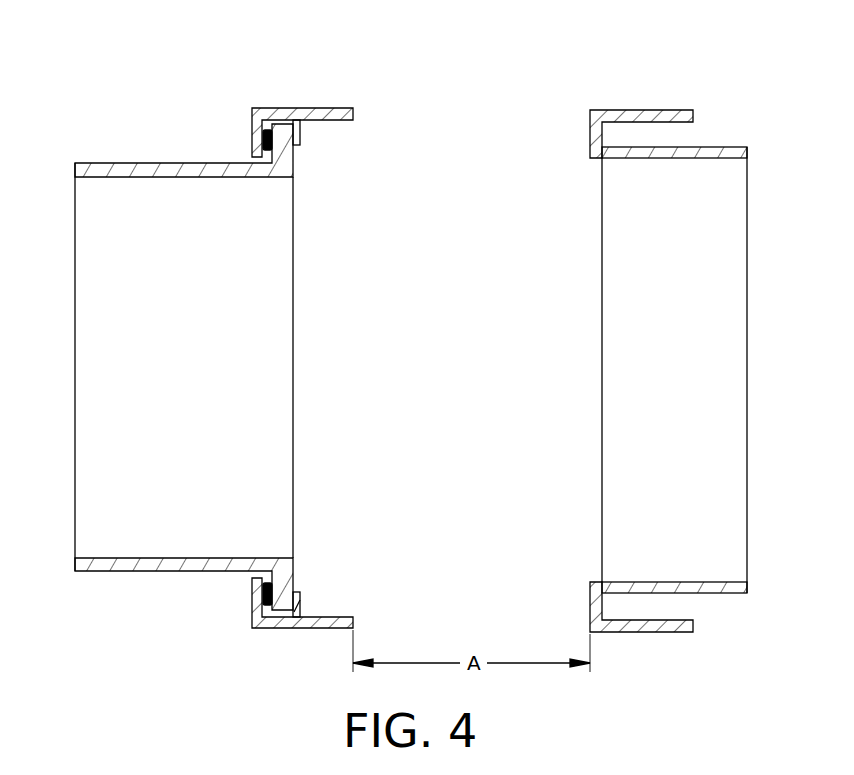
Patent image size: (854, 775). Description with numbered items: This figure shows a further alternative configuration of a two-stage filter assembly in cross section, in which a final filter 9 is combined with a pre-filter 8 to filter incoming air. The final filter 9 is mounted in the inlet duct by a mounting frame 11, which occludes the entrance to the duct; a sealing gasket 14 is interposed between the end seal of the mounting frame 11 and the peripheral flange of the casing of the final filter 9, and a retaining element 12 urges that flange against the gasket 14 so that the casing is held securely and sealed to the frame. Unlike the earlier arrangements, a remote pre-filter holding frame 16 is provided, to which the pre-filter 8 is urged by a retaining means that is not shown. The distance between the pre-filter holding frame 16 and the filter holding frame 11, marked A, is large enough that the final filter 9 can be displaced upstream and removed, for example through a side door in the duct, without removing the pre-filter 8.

The pre-filter 8 is at (733, 147).
The final filter 9 is at (88, 294).
The mounting frame 11 is at (322, 107).
The retaining element 12 is at (302, 606).
The sealing gasket 14 is at (263, 138).
The pre-filter holding frame 16 is at (646, 110).